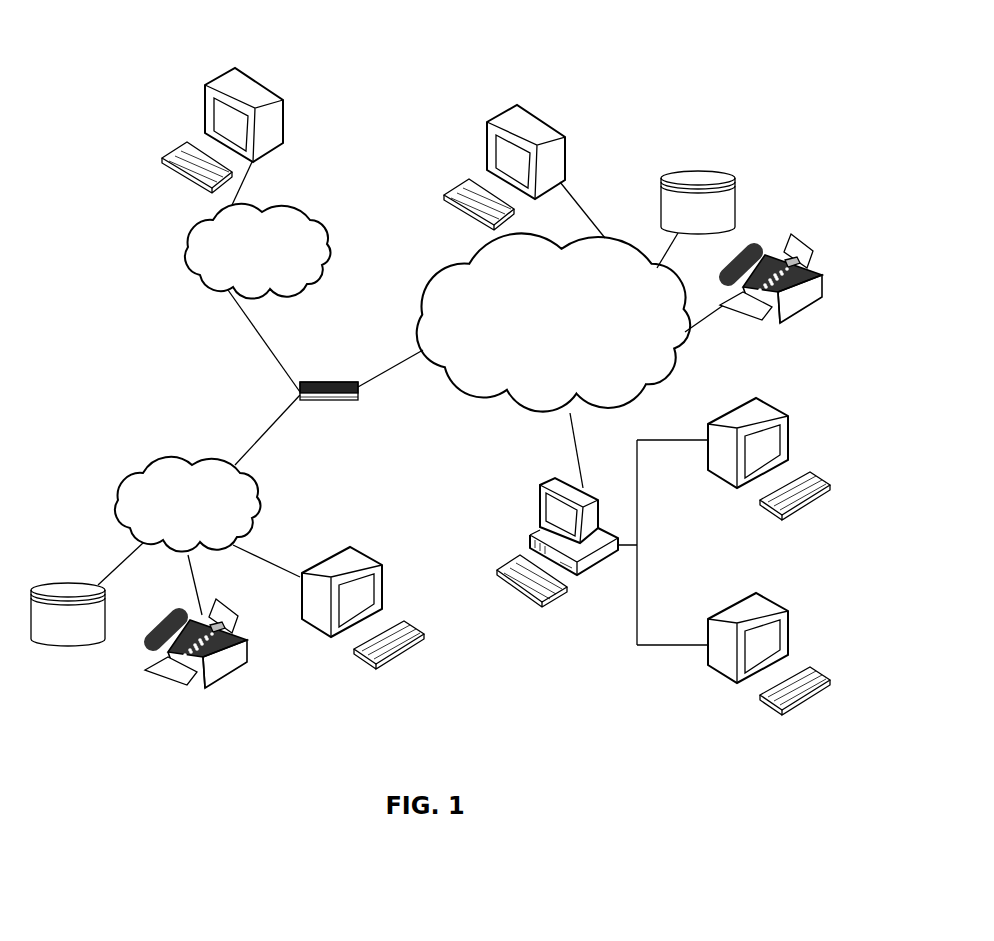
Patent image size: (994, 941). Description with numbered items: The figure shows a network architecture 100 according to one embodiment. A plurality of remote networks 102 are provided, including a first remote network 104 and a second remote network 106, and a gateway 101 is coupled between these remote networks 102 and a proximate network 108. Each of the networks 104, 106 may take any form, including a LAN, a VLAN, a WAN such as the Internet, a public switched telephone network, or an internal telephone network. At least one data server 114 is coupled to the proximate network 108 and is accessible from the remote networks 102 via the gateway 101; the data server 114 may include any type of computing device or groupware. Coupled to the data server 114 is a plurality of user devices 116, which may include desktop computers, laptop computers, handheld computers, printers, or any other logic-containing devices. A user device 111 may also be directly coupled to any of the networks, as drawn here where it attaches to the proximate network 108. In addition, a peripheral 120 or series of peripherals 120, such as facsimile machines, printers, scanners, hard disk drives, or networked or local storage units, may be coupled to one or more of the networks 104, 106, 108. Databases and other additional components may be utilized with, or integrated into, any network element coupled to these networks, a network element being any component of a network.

The network architecture 100 is at (146, 53).
The gateway 101 is at (313, 383).
The remote networks 102 is at (172, 307).
The first remote network 104 is at (120, 480).
The second remote network 106 is at (322, 224).
The proximate network 108 is at (650, 387).
The user device 111 is at (565, 135).
The data server 114 is at (540, 500).
The user devices 116 is at (283, 105).
The peripheral 120 is at (735, 184).